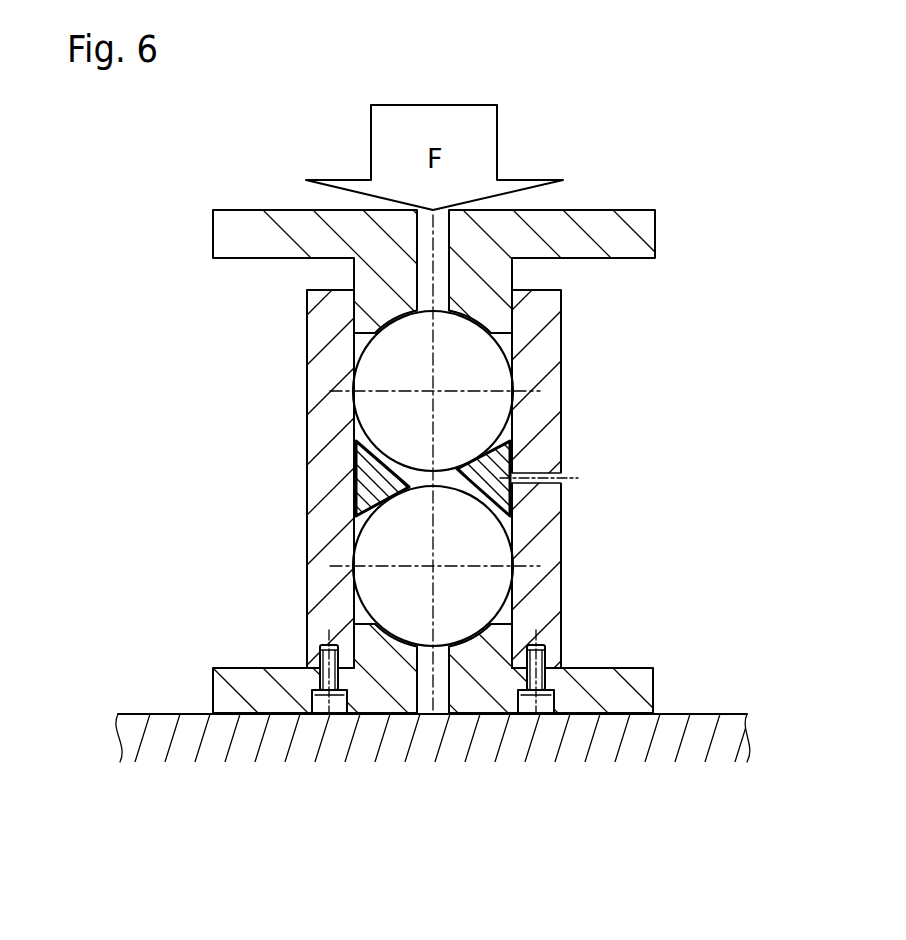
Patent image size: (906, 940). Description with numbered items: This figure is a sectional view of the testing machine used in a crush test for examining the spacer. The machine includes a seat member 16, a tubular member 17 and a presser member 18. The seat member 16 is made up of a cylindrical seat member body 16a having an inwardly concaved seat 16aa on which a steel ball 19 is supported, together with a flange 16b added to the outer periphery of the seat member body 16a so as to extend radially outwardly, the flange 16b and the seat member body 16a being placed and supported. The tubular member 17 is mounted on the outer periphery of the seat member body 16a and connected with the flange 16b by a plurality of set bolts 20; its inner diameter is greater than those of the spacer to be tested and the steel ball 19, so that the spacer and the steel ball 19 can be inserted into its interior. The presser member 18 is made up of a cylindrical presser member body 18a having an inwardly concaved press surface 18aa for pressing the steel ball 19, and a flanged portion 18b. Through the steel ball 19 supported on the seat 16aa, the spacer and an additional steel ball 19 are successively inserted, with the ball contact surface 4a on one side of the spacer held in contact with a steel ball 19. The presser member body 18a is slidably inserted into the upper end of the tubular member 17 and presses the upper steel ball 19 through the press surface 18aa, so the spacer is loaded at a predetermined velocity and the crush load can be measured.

The presser member 18 is at (478, 225).
The presser member body 18a is at (513, 232).
The flanged portion 18b is at (635, 244).
The press surface 18aa is at (396, 322).
The tubular member 17 is at (533, 410).
The steel ball 19 is at (497, 380).
The ball contact surface 4a is at (407, 466).
The seat member 16 is at (438, 734).
The seat member body 16a is at (470, 700).
The flange 16b is at (618, 702).
The seat 16aa is at (412, 637).
The set bolt 20 is at (540, 663).